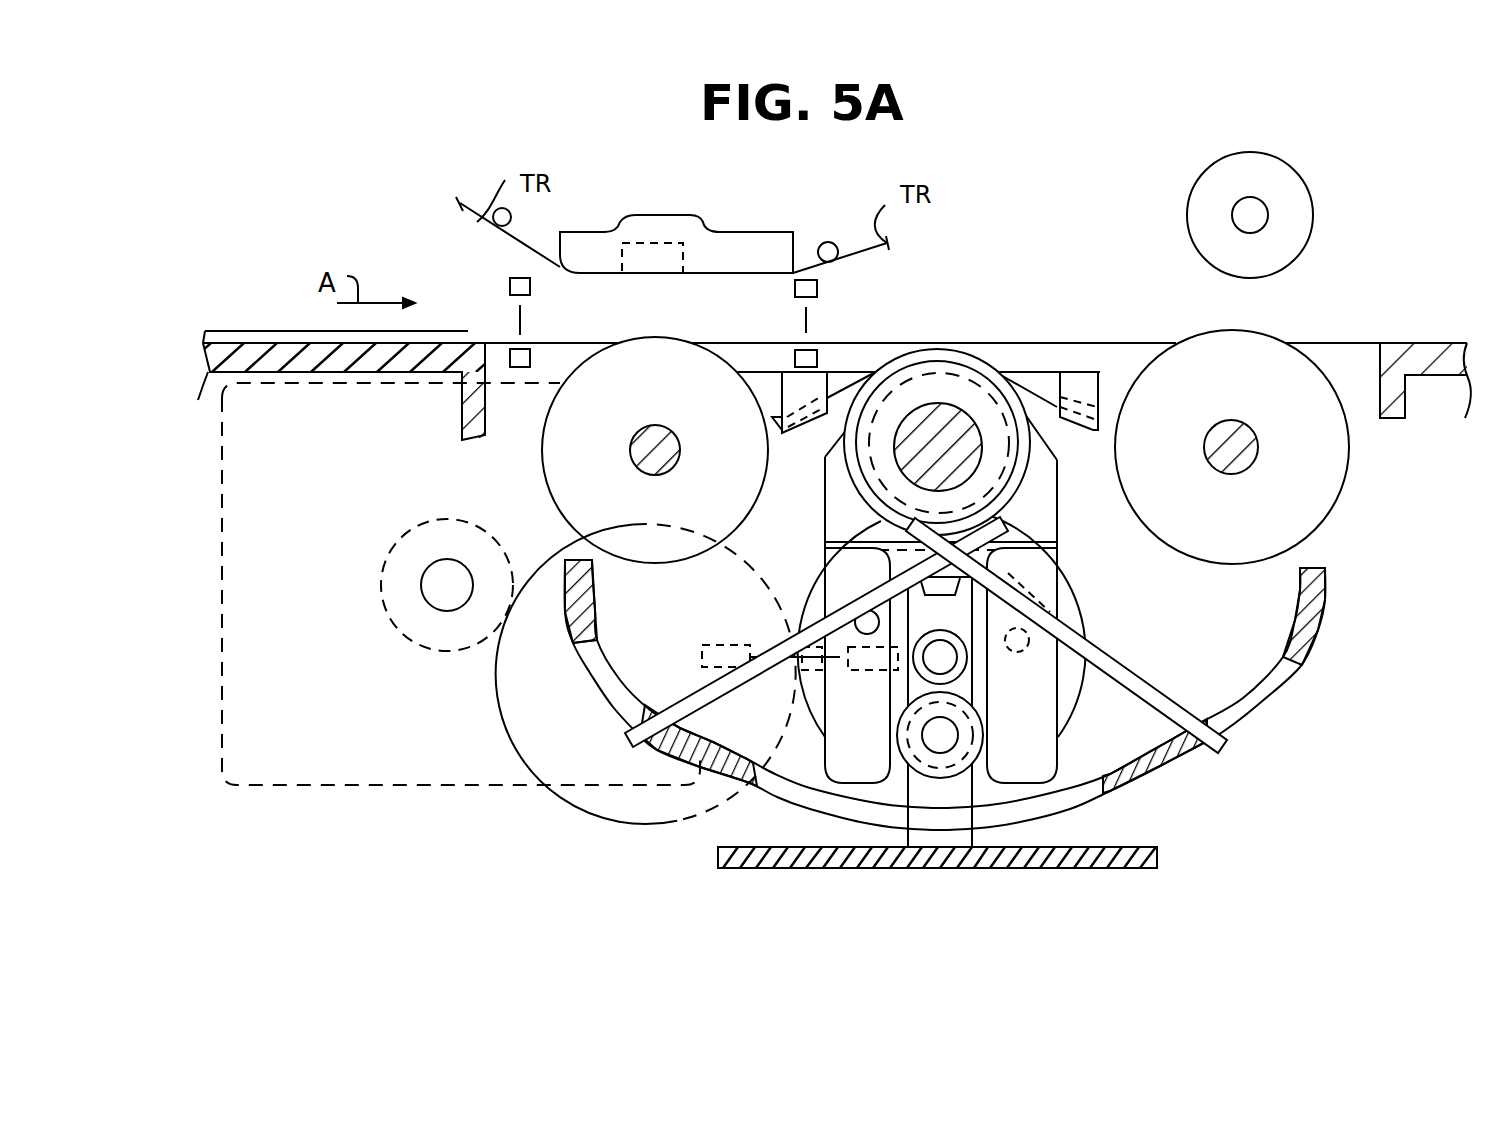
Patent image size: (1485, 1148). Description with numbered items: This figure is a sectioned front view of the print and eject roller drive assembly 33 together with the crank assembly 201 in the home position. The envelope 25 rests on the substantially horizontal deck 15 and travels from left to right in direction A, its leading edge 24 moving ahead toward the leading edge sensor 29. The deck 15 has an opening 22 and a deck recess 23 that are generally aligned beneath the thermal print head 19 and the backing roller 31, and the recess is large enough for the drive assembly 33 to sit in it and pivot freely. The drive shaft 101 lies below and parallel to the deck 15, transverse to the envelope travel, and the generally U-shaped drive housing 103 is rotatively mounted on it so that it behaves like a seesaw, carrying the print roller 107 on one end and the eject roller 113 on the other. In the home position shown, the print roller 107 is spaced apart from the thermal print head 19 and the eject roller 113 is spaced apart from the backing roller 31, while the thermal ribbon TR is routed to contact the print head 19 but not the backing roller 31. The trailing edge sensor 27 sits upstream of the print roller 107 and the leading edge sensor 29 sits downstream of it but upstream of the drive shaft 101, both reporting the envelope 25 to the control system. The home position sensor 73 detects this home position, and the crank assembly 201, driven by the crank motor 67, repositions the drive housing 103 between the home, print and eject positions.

The deck 15 is at (1402, 345).
The thermal print head 19 is at (663, 215).
The opening 22 is at (490, 345).
The deck recess 23 is at (1345, 372).
The leading edge 24 is at (468, 331).
The envelope 25 is at (255, 331).
The trailing edge sensor 27 is at (494, 350).
The leading edge sensor 29 is at (793, 283).
The backing roller 31 is at (1315, 205).
The print and eject roller drive assembly 33 is at (518, 858).
The crank motor 67 is at (218, 623).
The home position sensor 73 is at (722, 643).
The drive shaft 101 is at (970, 417).
The drive housing 103 is at (1325, 600).
The print roller 107 is at (542, 485).
The eject roller 113 is at (1350, 463).
The crank assembly 201 is at (803, 813).